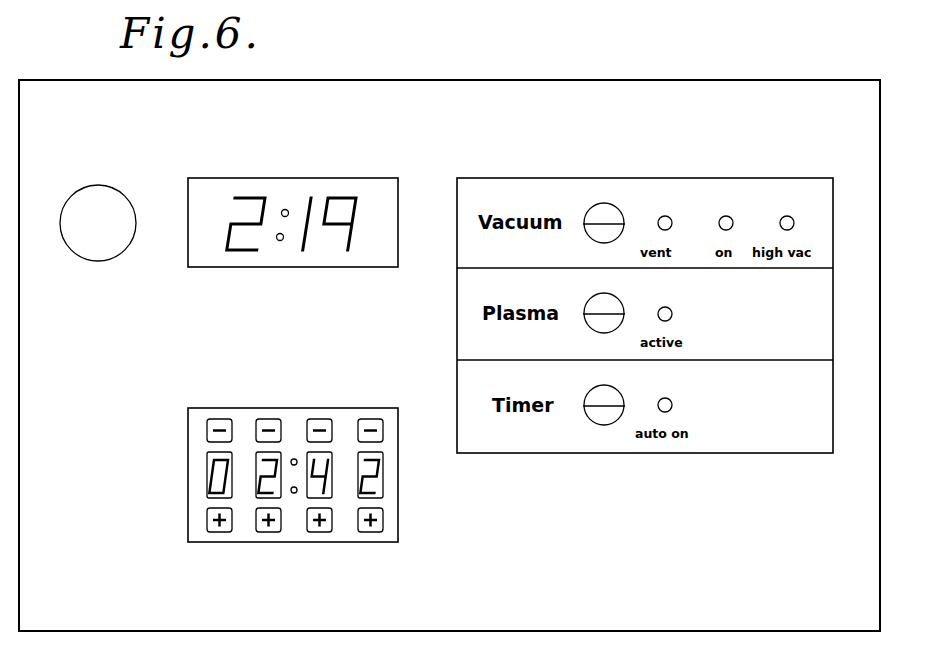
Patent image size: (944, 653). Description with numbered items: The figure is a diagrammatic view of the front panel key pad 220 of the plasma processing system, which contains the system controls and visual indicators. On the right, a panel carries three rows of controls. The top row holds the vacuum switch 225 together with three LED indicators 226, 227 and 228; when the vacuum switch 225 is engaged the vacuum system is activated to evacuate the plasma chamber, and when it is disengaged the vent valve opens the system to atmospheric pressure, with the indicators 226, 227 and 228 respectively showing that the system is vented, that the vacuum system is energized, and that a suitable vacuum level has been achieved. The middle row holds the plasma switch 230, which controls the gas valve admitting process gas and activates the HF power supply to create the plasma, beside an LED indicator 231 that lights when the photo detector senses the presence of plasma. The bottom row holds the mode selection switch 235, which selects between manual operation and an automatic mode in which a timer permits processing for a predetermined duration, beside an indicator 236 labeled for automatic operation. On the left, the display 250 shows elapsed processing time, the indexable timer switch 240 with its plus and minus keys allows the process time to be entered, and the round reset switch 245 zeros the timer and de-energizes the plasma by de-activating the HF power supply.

The key pad 220 is at (613, 80).
The vacuum switch 225 is at (588, 209).
The LED indicator 226 is at (666, 216).
The LED indicator 227 is at (727, 216).
The LED indicator 228 is at (795, 217).
The plasma switch 230 is at (590, 328).
The LED indicator 231 is at (677, 318).
The mode selection switch 235 is at (598, 425).
The timer auto on indicator light 236 is at (677, 408).
The timer switch 240 is at (188, 460).
The reset switch 245 is at (83, 248).
The display 250 is at (238, 178).